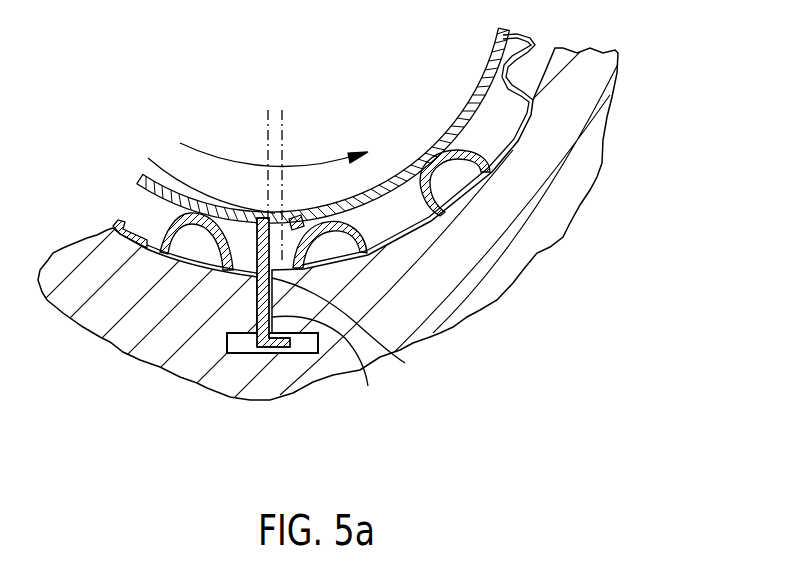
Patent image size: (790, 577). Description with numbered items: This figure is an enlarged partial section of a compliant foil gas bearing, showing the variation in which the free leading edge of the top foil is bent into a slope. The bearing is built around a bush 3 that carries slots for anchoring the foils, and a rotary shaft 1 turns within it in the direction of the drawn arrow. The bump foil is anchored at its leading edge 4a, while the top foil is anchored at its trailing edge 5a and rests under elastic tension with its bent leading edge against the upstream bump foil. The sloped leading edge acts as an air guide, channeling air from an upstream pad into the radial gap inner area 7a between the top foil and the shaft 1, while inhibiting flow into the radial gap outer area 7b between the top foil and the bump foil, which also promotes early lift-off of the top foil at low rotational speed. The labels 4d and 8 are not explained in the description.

The rotary shaft 1 is at (390, 67).
The bush 3 is at (558, 192).
The leading edge of bump foil 4a is at (334, 362).
The rim strip 4d is at (110, 339).
The trailing edge of top foil 5a is at (190, 375).
The radial gap inner area 7a is at (268, 212).
The radial gap outer area 7b is at (354, 330).
The center axis 8 is at (270, 110).